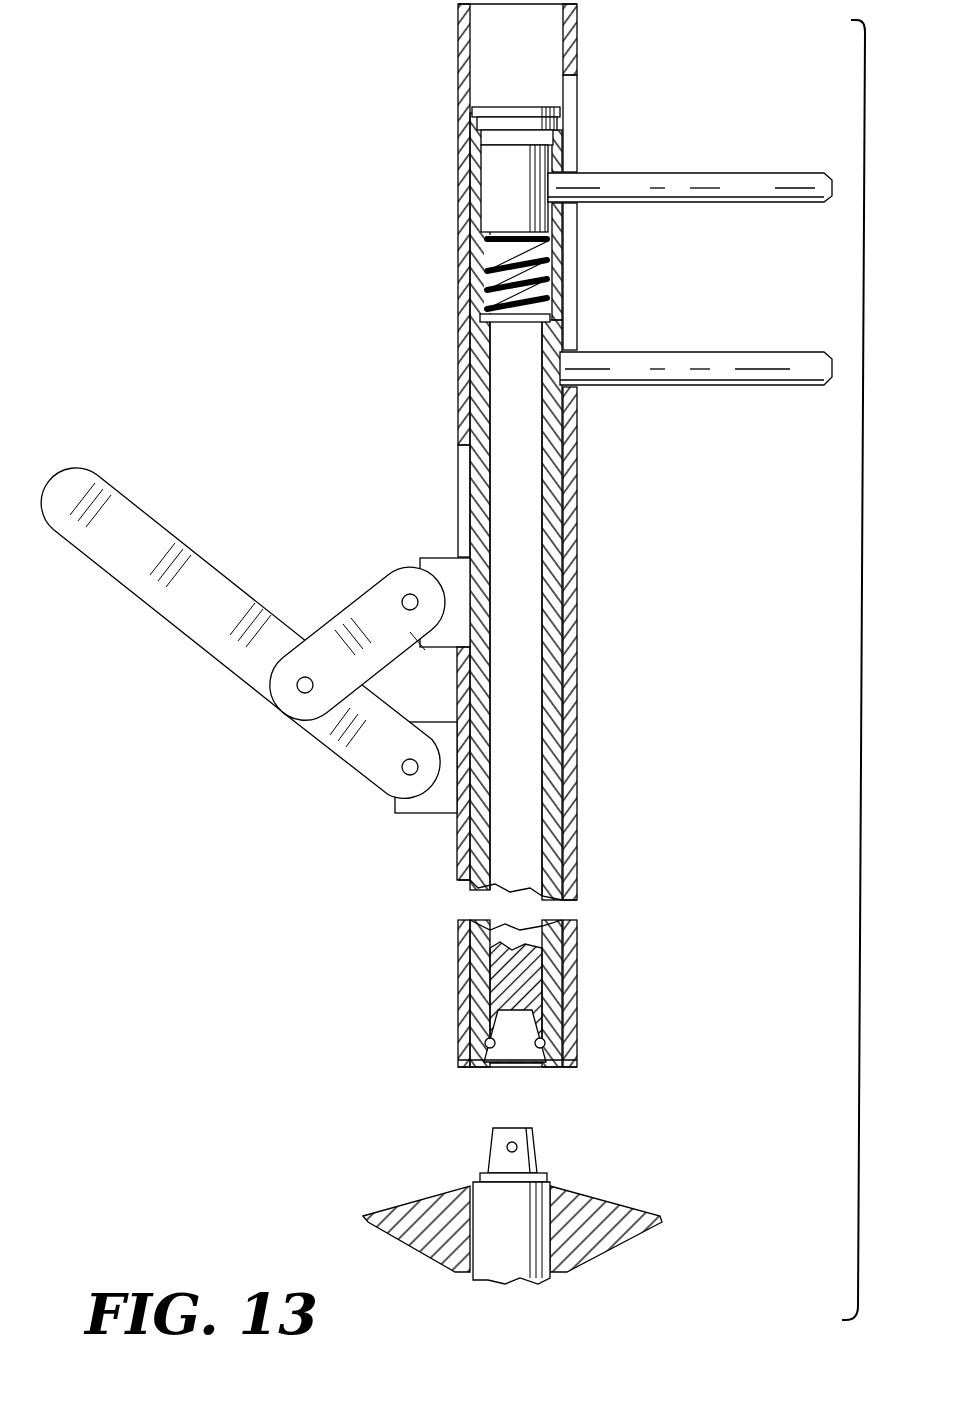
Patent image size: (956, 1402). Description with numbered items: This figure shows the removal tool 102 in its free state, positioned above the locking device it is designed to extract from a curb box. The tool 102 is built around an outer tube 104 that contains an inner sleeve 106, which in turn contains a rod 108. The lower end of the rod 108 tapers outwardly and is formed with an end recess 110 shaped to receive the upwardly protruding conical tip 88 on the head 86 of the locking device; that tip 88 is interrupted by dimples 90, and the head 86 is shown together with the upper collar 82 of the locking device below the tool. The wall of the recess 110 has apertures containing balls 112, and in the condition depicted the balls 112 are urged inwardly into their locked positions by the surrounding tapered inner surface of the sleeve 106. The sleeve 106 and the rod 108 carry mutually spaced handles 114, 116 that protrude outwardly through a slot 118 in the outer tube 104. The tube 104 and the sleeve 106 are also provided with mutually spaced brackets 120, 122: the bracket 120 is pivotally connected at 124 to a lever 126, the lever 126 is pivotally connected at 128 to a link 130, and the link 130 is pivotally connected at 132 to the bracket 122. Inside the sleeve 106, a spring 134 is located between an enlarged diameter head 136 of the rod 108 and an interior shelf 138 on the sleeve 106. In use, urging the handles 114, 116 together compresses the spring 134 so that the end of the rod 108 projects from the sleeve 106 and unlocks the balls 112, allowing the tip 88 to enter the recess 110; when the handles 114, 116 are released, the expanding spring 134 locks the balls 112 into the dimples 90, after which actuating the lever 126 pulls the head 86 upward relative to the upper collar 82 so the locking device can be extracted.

The upper collar 82 is at (600, 1212).
The head 86 is at (530, 1195).
The conical tip 88 is at (503, 1128).
The dimples 90 is at (518, 1150).
The tool 102 is at (640, 632).
The outer tube 104 is at (580, 730).
The inner sleeve 106 is at (566, 768).
The rod 108 is at (525, 810).
The end recess 110 is at (523, 1052).
The balls 112 is at (486, 1043).
The handle 114 is at (680, 352).
The handle 116 is at (670, 178).
The slot 118 is at (577, 316).
The bracket 120 is at (420, 813).
The bracket 122 is at (450, 560).
The pivotal connection 124 is at (403, 767).
The lever 126 is at (170, 605).
The pivotal connection 128 is at (300, 690).
The link 130 is at (328, 637).
The pivotal connection 132 is at (407, 594).
The spring 134 is at (555, 282).
The enlarged diameter head 136 is at (495, 173).
The interior shelf 138 is at (480, 318).